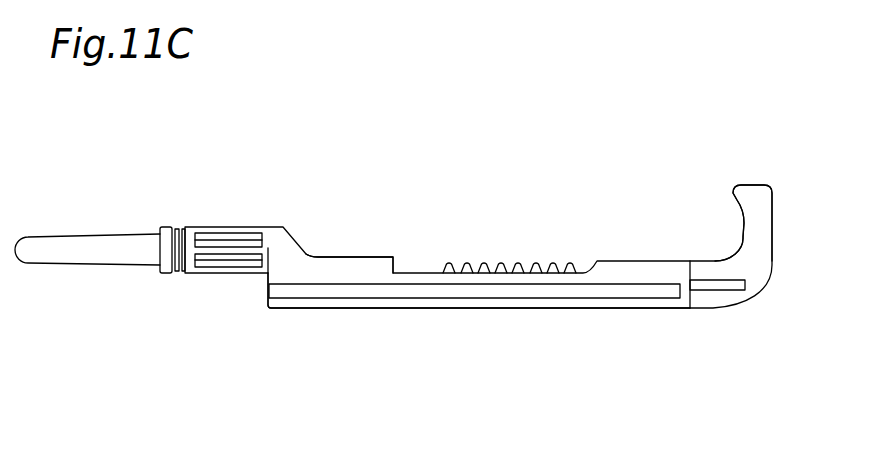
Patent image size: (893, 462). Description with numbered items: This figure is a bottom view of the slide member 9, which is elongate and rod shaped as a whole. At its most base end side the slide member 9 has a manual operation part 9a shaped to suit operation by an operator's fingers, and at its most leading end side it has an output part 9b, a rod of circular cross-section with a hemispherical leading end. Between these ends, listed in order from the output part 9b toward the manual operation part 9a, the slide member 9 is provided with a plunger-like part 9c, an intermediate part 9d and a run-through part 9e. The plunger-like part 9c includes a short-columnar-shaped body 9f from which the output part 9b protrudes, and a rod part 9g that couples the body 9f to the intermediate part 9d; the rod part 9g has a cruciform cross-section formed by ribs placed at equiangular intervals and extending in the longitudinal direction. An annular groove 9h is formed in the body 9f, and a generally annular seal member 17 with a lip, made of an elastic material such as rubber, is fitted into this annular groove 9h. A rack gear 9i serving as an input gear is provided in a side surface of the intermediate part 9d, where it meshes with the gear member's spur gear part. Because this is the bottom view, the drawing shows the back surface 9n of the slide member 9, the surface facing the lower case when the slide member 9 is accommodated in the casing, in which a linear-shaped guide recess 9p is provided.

The slide member 9 is at (637, 165).
The manual operation part 9a is at (753, 222).
The output part 9b is at (83, 254).
The plunger-like part 9c is at (273, 328).
The intermediate part 9d is at (422, 273).
The run-through part 9e is at (712, 300).
The body 9f is at (183, 273).
The rod part 9g is at (243, 268).
The annular groove 9h is at (172, 273).
The rack gear 9i is at (508, 263).
The back surface 9n is at (613, 302).
The guide recess 9p is at (378, 290).
The seal member 17 is at (173, 227).